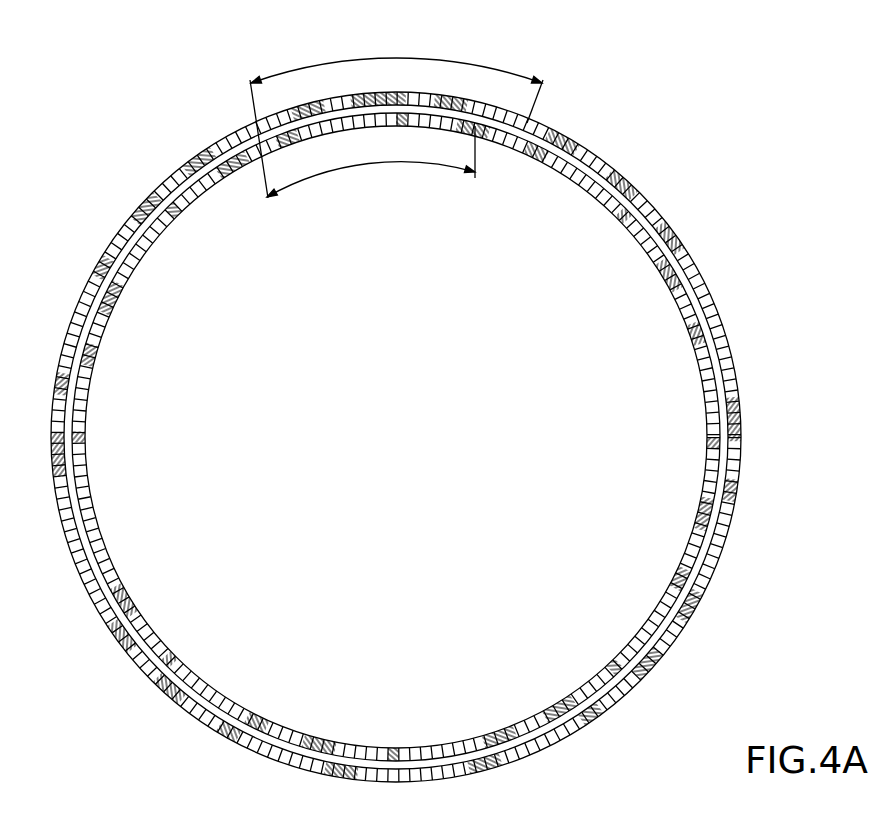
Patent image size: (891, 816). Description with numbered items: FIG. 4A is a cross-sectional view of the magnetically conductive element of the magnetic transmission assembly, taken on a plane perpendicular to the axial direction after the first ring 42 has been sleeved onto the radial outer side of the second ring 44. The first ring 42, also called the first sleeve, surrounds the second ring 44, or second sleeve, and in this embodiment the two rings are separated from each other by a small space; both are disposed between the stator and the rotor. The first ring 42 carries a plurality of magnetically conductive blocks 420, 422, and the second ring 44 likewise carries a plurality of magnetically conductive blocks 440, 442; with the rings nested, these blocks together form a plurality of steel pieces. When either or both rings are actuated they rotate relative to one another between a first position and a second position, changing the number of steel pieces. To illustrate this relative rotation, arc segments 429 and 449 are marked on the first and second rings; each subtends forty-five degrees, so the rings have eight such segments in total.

The first ring 42 is at (711, 290).
The second ring 44 is at (680, 304).
The magnetically conductive block 420 is at (305, 104).
The magnetically conductive block 422 is at (455, 94).
The arc segment 429 is at (378, 58).
The magnetically conductive block 440 is at (291, 140).
The magnetically conductive block 442 is at (461, 134).
The arc segment 449 is at (362, 165).